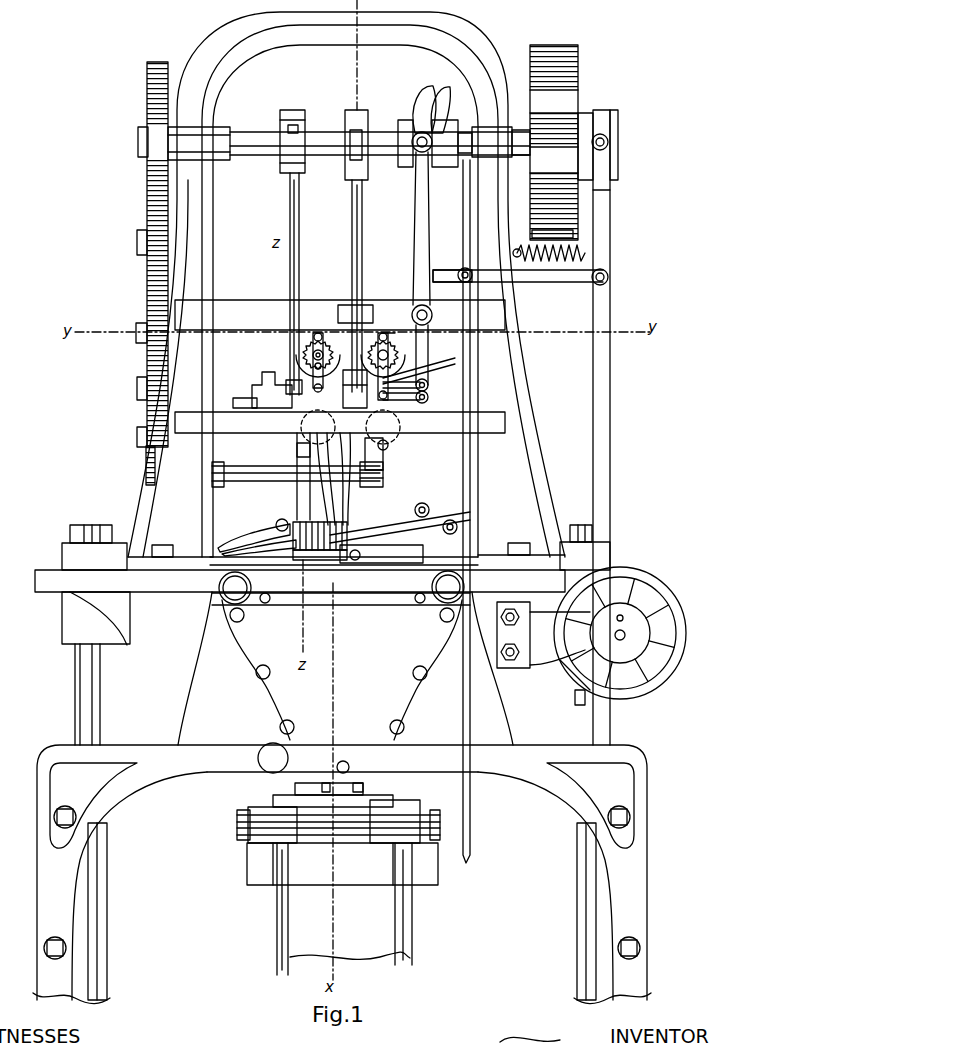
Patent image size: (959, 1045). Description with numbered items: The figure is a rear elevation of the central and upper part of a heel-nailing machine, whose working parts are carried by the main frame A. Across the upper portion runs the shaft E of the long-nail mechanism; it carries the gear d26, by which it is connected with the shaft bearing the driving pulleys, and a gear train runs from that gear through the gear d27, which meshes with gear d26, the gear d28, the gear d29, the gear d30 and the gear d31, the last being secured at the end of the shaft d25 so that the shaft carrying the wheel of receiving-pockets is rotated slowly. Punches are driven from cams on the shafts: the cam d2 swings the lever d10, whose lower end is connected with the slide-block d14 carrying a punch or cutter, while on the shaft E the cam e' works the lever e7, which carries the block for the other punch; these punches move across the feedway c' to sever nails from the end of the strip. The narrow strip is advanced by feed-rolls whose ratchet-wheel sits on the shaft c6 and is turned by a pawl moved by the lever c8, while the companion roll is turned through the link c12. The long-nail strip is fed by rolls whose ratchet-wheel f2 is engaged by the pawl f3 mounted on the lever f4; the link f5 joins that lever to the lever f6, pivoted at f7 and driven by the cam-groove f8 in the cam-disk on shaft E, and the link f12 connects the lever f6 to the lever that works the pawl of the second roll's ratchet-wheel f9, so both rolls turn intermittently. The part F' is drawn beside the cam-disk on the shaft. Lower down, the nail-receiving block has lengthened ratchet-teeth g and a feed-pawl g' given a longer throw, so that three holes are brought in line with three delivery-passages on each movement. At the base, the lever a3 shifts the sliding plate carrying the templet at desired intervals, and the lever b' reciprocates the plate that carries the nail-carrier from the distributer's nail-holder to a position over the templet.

The main frame A is at (342, 764).
The shaft E is at (253, 140).
The cam d2 is at (295, 129).
The lever d10 is at (300, 218).
The cam e' is at (358, 133).
The lever e7 is at (362, 233).
The cam-groove f8 is at (422, 110).
The collar F' is at (423, 155).
The lever f6 is at (432, 227).
The pivot f7 is at (405, 300).
The gear d26 is at (148, 176).
The gear d27 is at (147, 272).
The gear d28 is at (147, 356).
The gear d29 is at (145, 398).
The gear d30 is at (143, 453).
The gear d31 is at (147, 480).
The feedway c' is at (320, 360).
The shaft c6 is at (312, 356).
The lever c8 is at (326, 368).
The ratchet-wheel f2 is at (391, 357).
The pawl f3 is at (395, 338).
The lever f4 is at (403, 368).
The link f5 is at (429, 386).
The link f12 is at (413, 403).
The slide-block d14 is at (272, 366).
The link c12 is at (297, 446).
The ratchet-wheel f9 is at (390, 448).
The shaft d25 is at (257, 480).
The feed-pawl g' is at (257, 534).
The ratchet-teeth g is at (344, 567).
The lever a3 is at (276, 912).
The lever b' is at (421, 904).